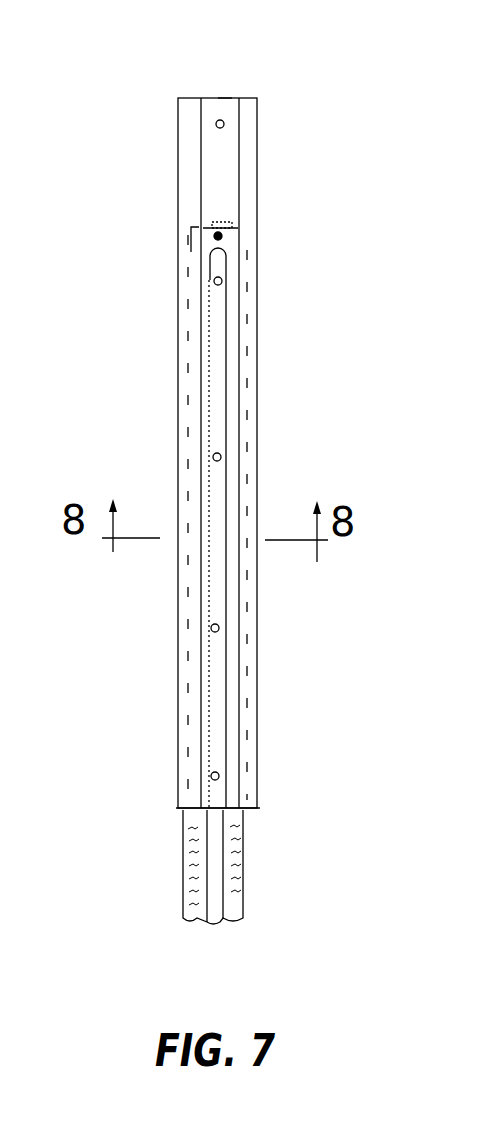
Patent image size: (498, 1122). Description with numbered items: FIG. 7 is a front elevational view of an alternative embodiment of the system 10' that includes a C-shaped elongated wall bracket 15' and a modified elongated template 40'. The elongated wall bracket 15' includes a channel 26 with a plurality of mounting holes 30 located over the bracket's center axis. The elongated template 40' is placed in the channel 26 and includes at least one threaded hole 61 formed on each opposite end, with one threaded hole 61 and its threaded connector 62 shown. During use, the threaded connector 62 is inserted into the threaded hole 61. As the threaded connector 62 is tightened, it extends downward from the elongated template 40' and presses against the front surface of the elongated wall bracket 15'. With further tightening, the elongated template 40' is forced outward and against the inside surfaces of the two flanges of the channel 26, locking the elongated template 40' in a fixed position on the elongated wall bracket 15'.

The fence post assembly 10' is at (104, 48).
The elongated wall bracket 15' is at (259, 511).
The channel 26 is at (226, 97).
The mounting holes 30 is at (217, 125).
The elongated template 40' is at (291, 517).
The threaded hole 61 is at (222, 236).
The threaded connector 62 is at (234, 223).